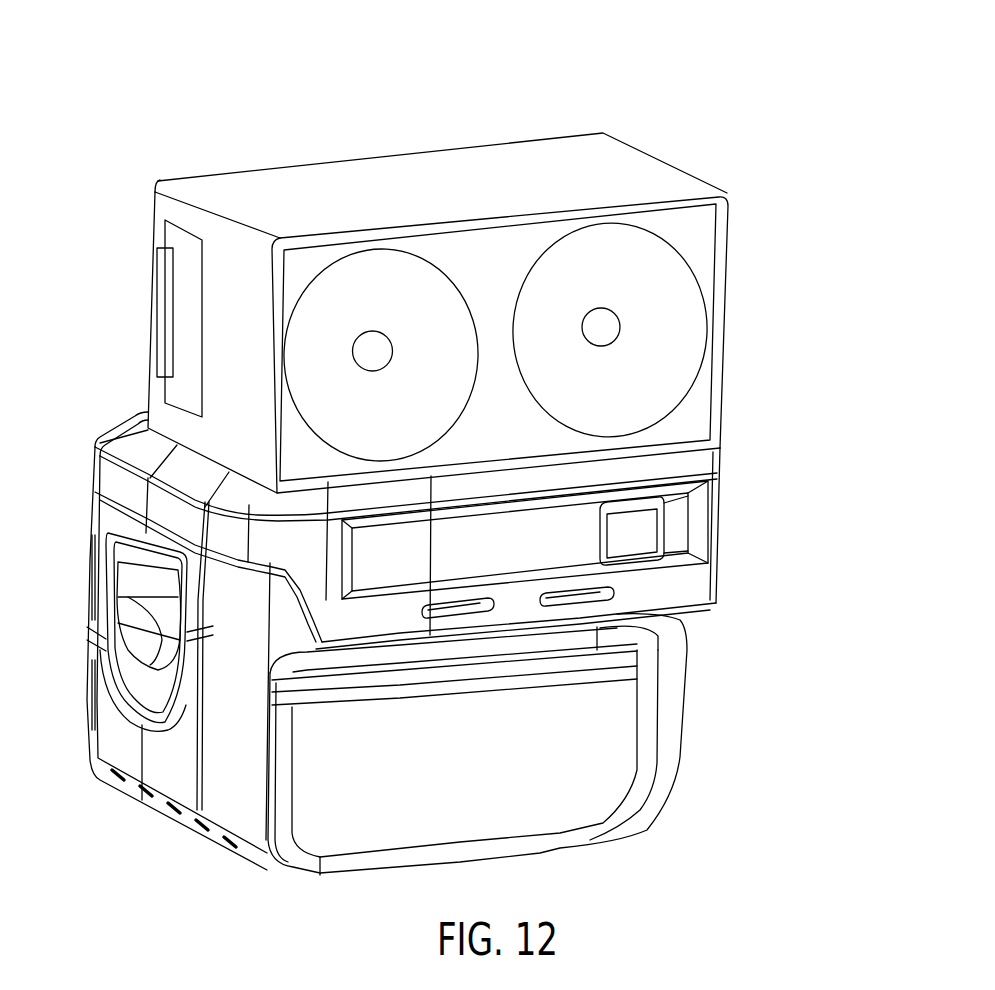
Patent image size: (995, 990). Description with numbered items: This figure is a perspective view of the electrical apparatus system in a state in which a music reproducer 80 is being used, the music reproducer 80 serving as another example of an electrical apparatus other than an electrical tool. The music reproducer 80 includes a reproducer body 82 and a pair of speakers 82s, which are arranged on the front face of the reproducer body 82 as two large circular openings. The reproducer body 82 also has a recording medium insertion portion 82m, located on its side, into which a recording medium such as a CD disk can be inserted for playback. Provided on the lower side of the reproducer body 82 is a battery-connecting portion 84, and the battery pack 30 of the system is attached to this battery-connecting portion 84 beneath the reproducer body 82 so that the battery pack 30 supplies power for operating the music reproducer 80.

The music reproducer 80 is at (440, 437).
The reproducer body 82 is at (597, 172).
The speakers 82s is at (382, 263).
The recording medium insertion portion 82m is at (177, 288).
The battery-connecting portion 84 is at (655, 593).
The battery pack 30 is at (692, 725).